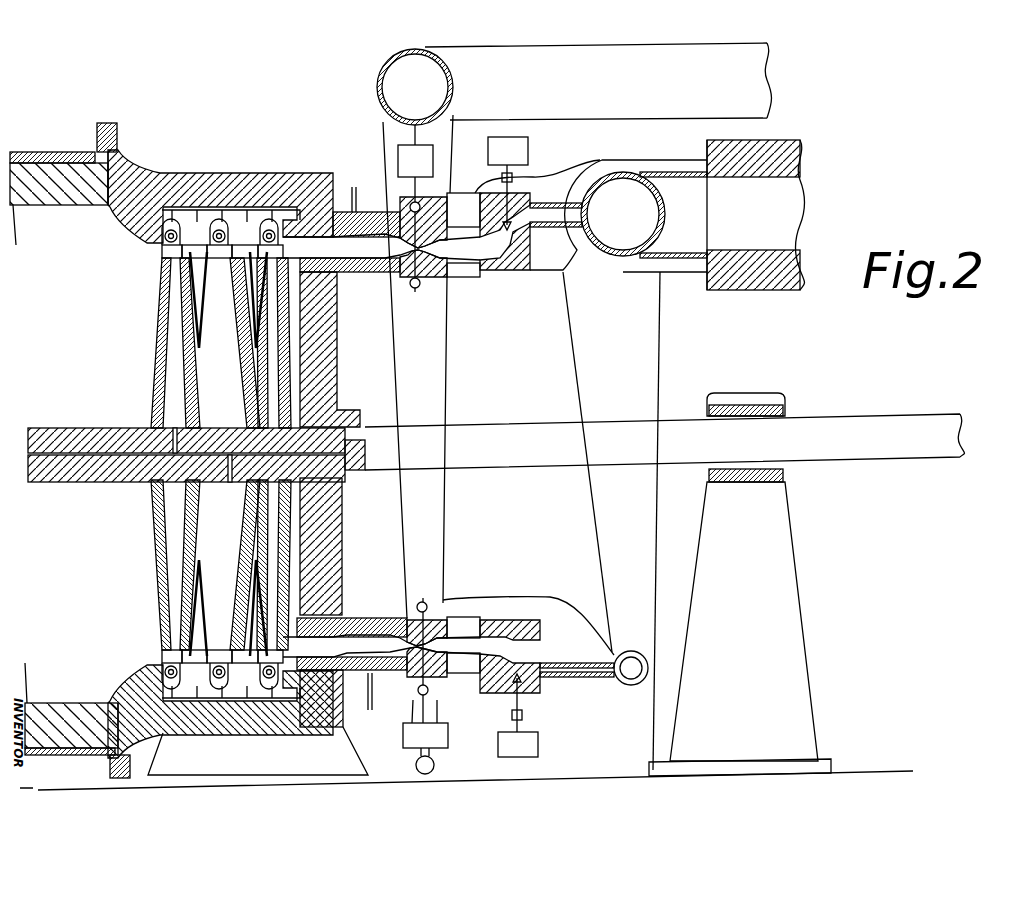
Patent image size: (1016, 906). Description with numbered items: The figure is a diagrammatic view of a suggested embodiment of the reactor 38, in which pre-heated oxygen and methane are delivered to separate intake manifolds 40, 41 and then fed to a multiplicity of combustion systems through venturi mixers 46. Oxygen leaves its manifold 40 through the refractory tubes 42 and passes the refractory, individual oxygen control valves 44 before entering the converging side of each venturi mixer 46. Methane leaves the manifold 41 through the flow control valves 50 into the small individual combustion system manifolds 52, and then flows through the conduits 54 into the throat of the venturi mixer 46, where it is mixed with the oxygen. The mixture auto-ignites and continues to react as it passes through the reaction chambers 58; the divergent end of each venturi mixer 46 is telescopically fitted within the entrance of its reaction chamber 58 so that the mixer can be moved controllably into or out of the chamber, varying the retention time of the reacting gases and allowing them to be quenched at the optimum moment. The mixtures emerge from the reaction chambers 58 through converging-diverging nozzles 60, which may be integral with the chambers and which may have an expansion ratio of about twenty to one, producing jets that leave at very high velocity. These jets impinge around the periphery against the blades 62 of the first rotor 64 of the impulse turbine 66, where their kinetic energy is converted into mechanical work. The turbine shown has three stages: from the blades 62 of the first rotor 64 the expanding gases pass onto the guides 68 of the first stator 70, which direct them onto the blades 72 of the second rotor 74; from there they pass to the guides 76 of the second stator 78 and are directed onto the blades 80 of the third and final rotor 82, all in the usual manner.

The reactor 38 is at (365, 150).
The intake manifold 40 is at (668, 348).
The intake manifold 41 is at (455, 372).
The refractory tube 42 is at (568, 192).
The oxygen control valve 44 is at (518, 196).
The venturi mixer 46 is at (438, 277).
The flow control valve 50 is at (423, 449).
The individual combustion system manifold 52 is at (440, 193).
The conduit 54 is at (438, 213).
The reaction chamber 58 is at (381, 445).
The converging-diverging nozzle 60 is at (337, 287).
The blades 62 is at (270, 453).
The first rotor 64 is at (270, 515).
The impulse turbine 66 is at (236, 172).
The guides 68 is at (245, 453).
The first stator 70 is at (262, 352).
The blades 72 is at (219, 453).
The second rotor 74 is at (215, 520).
The guides 76 is at (194, 453).
The second stator 78 is at (238, 362).
The blades 80 is at (165, 252).
The third rotor 82 is at (157, 350).